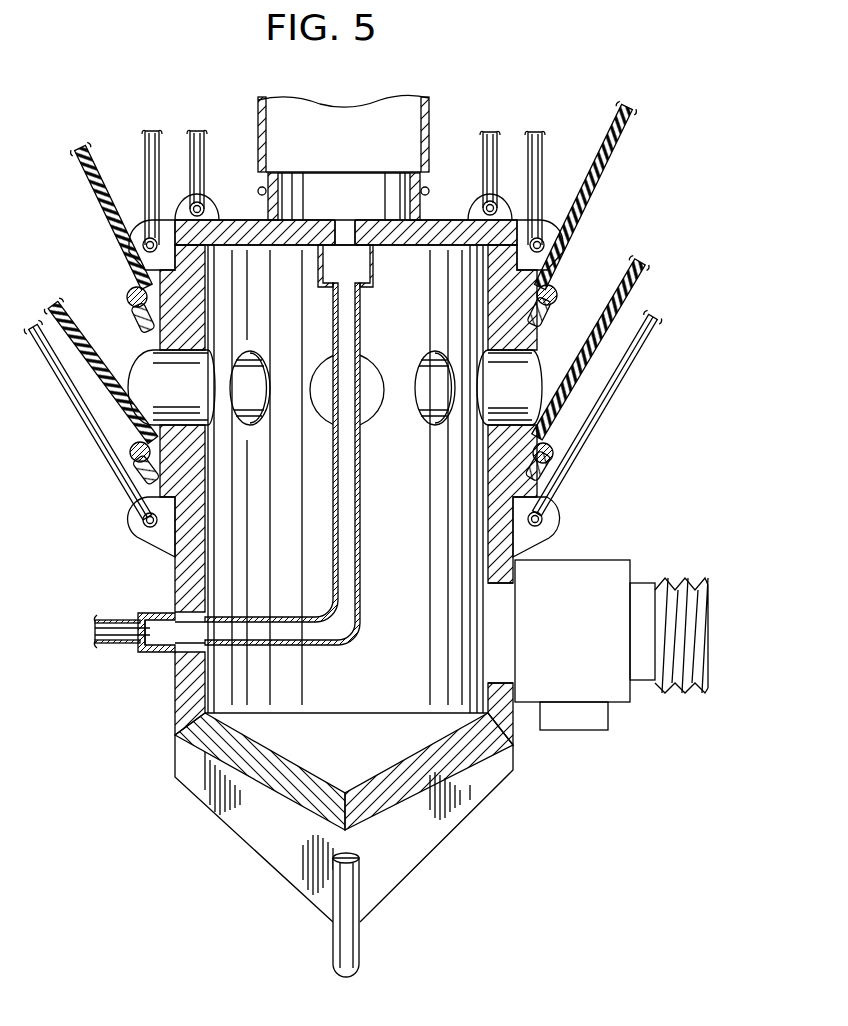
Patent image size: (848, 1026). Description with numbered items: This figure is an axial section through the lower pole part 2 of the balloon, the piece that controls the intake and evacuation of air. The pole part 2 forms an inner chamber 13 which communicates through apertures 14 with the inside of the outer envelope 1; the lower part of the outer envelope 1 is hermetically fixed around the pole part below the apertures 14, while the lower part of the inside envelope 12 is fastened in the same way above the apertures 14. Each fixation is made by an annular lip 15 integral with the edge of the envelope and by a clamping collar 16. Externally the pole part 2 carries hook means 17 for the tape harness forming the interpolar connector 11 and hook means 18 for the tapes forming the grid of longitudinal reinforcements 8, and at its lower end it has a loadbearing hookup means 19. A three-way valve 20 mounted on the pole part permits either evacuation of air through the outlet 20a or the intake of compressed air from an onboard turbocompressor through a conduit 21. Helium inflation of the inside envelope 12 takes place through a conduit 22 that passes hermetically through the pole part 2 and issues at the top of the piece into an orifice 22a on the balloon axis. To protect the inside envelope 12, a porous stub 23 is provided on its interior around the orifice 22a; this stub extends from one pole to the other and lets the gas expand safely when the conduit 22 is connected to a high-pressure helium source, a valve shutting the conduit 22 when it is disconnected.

The outer envelope 1 is at (633, 268).
The lower pole part 2 is at (158, 712).
The longitudinal reinforcements 8 is at (603, 413).
The interpolar connector 11 is at (537, 157).
The inside envelope 12 is at (600, 188).
The inner chamber 13 is at (430, 591).
The apertures 14 is at (167, 382).
The annular lip 15 is at (547, 327).
The clamping collar 16 is at (552, 290).
The hook means 17 is at (475, 207).
The hook means 18 is at (558, 513).
The loadbearing hookup means 19 is at (412, 863).
The three-way valve 20 is at (620, 567).
The outlet 20a is at (598, 723).
The conduit 21 is at (687, 578).
The conduit 22 is at (303, 636).
The orifice 22a is at (345, 233).
The porous stub 23 is at (257, 115).